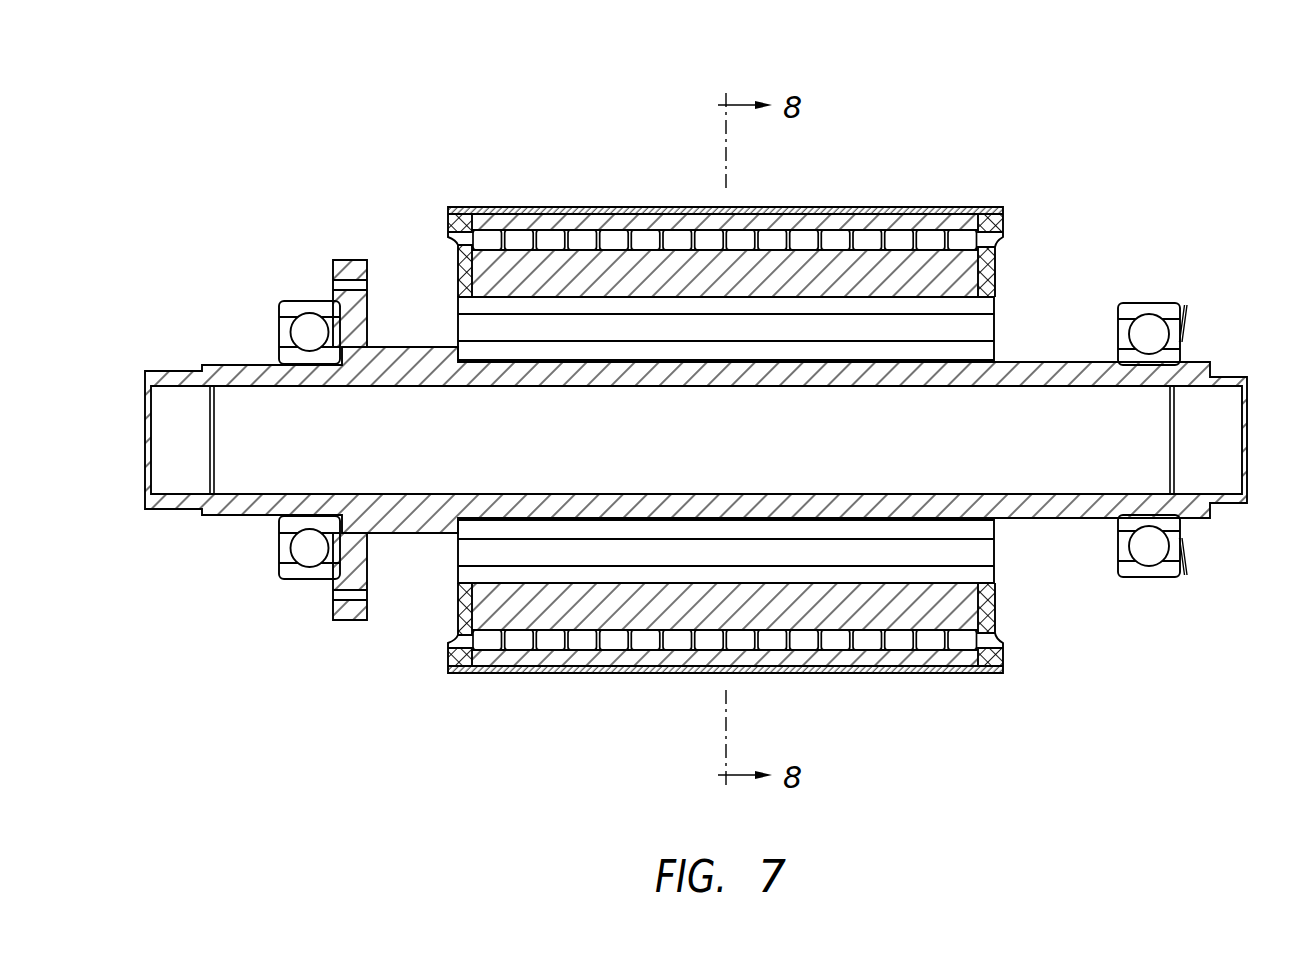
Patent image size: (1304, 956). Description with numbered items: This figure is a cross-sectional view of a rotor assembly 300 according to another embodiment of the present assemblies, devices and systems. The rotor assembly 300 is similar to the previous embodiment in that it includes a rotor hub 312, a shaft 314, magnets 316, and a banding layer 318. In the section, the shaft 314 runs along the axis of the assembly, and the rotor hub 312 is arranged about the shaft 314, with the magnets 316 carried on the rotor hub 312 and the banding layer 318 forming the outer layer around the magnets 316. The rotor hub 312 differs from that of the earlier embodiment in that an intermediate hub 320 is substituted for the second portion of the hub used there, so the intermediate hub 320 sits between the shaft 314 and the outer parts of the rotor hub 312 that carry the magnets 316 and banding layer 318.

The rotor assembly 300 is at (1191, 98).
The rotor hub 312 is at (997, 268).
The shaft 314 is at (1050, 362).
The magnets 316 is at (803, 240).
The banding layer 318 is at (918, 208).
The intermediate hub 320 is at (456, 300).